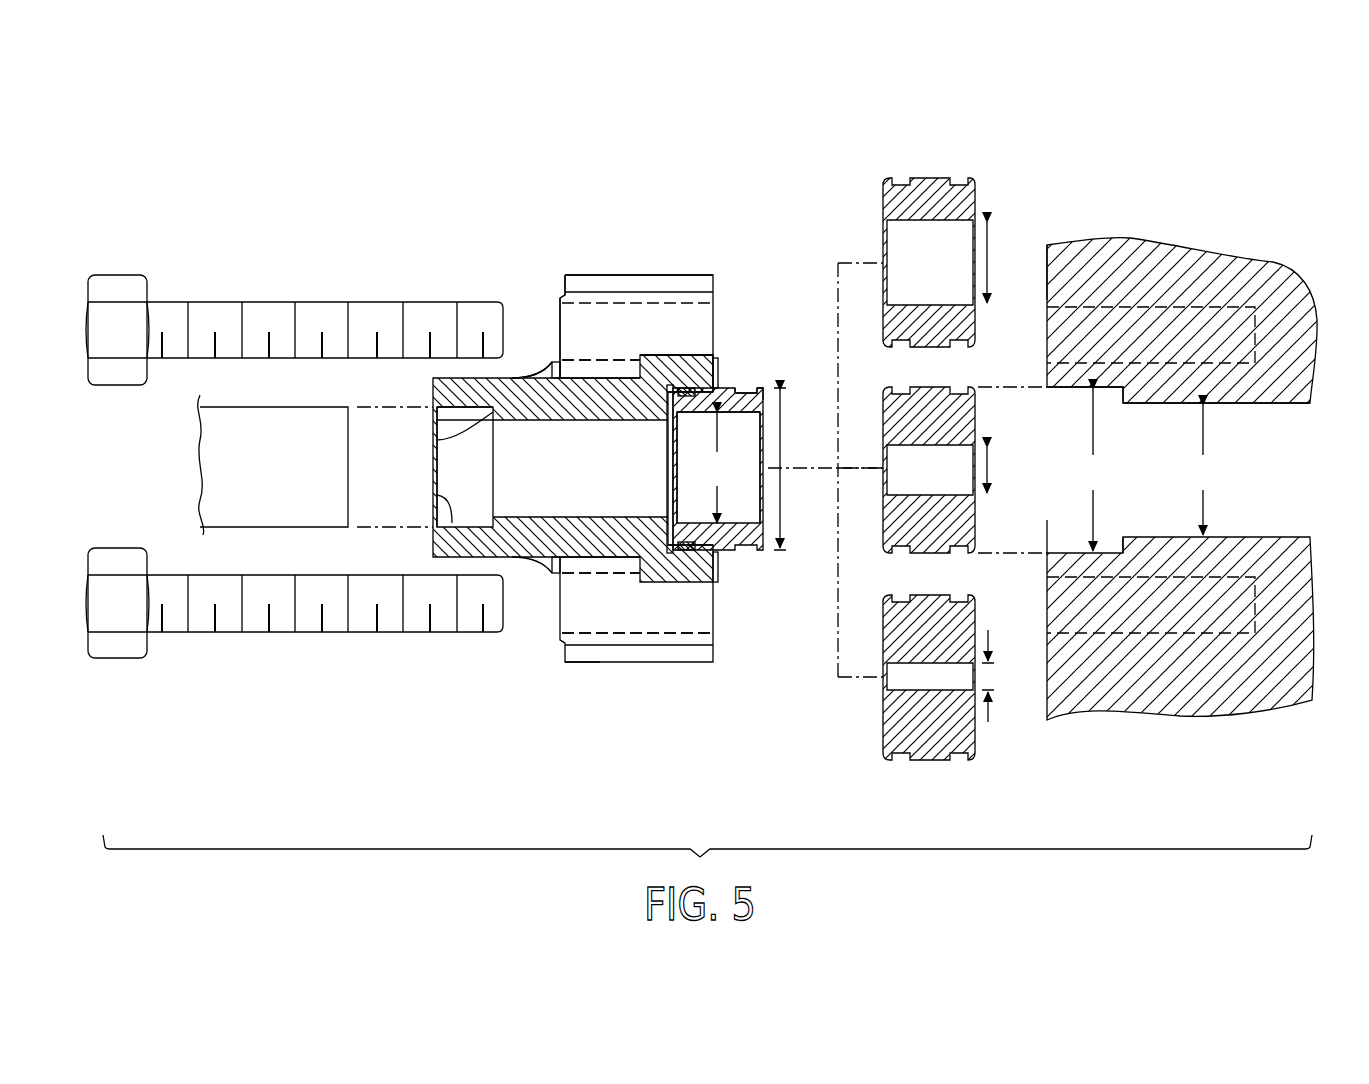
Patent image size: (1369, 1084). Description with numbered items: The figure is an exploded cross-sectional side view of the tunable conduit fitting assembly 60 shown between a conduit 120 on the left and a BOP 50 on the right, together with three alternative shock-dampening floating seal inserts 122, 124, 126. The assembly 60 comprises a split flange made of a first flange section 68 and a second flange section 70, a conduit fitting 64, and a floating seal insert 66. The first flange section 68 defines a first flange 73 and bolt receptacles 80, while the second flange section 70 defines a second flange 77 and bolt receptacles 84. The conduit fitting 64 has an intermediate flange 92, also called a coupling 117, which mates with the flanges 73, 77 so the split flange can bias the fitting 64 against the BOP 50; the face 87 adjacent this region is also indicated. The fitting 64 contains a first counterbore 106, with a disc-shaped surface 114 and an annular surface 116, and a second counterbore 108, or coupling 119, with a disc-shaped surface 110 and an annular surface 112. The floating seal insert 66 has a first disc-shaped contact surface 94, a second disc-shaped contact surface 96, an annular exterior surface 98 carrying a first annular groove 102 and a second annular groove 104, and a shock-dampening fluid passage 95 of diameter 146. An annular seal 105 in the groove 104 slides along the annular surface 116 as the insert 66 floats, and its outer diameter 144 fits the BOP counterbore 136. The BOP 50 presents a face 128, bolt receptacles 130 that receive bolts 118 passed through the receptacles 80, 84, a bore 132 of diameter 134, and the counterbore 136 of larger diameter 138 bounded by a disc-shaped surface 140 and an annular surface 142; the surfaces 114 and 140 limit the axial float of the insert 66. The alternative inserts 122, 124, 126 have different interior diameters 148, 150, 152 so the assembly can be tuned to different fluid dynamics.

The BOP 50 is at (1222, 275).
The tunable conduit fitting assembly 60 is at (673, 189).
The conduit fitting 64 is at (410, 555).
The floating seal insert 66 is at (764, 561).
The first flange section 68 is at (633, 315).
The second flange section 70 is at (638, 617).
The first flange 73 is at (625, 375).
The second flange 77 is at (635, 570).
The bolt receptacles 80 is at (552, 297).
The bolt receptacles 84 is at (570, 652).
The hub flange face 87 is at (713, 372).
The intermediate flange 92 is at (638, 377).
The first disc-shaped contact surface 94 is at (668, 440).
The shock-dampening fluid passage 95 is at (690, 500).
The second disc-shaped contact surface 96 is at (760, 392).
The annular exterior surface 98 is at (714, 553).
The first annular groove 102 is at (748, 392).
The second annular groove 104 is at (683, 388).
The annular seal 105 is at (688, 390).
The first counterbore 106 is at (660, 392).
The second counterbore 108 is at (448, 422).
The disc-shaped surface 110 is at (437, 442).
The annular surface 112 is at (437, 493).
The disc-shaped surface 114 is at (553, 380).
The annular surface 116 is at (700, 550).
The coupling 117 is at (700, 619).
The bolts 118 is at (118, 283).
The coupling 119 is at (409, 392).
The conduit 120 is at (293, 415).
The floating seal insert 122 is at (921, 172).
The floating seal insert 124 is at (921, 383).
The floating seal insert 126 is at (921, 590).
The face 128 is at (1045, 270).
The bolt receptacles 130 is at (1192, 307).
The bore 132 is at (1275, 450).
The diameter 134 is at (1203, 470).
The counterbore 136 is at (1070, 425).
The diameter 138 is at (1093, 470).
The disc-shaped surface 140 is at (1125, 535).
The annular surface 142 is at (1087, 550).
The diameter 144 is at (784, 482).
The diameter 146 is at (717, 467).
The interior diameter 148 is at (988, 262).
The interior diameter 150 is at (988, 470).
The interior diameter 152 is at (992, 680).